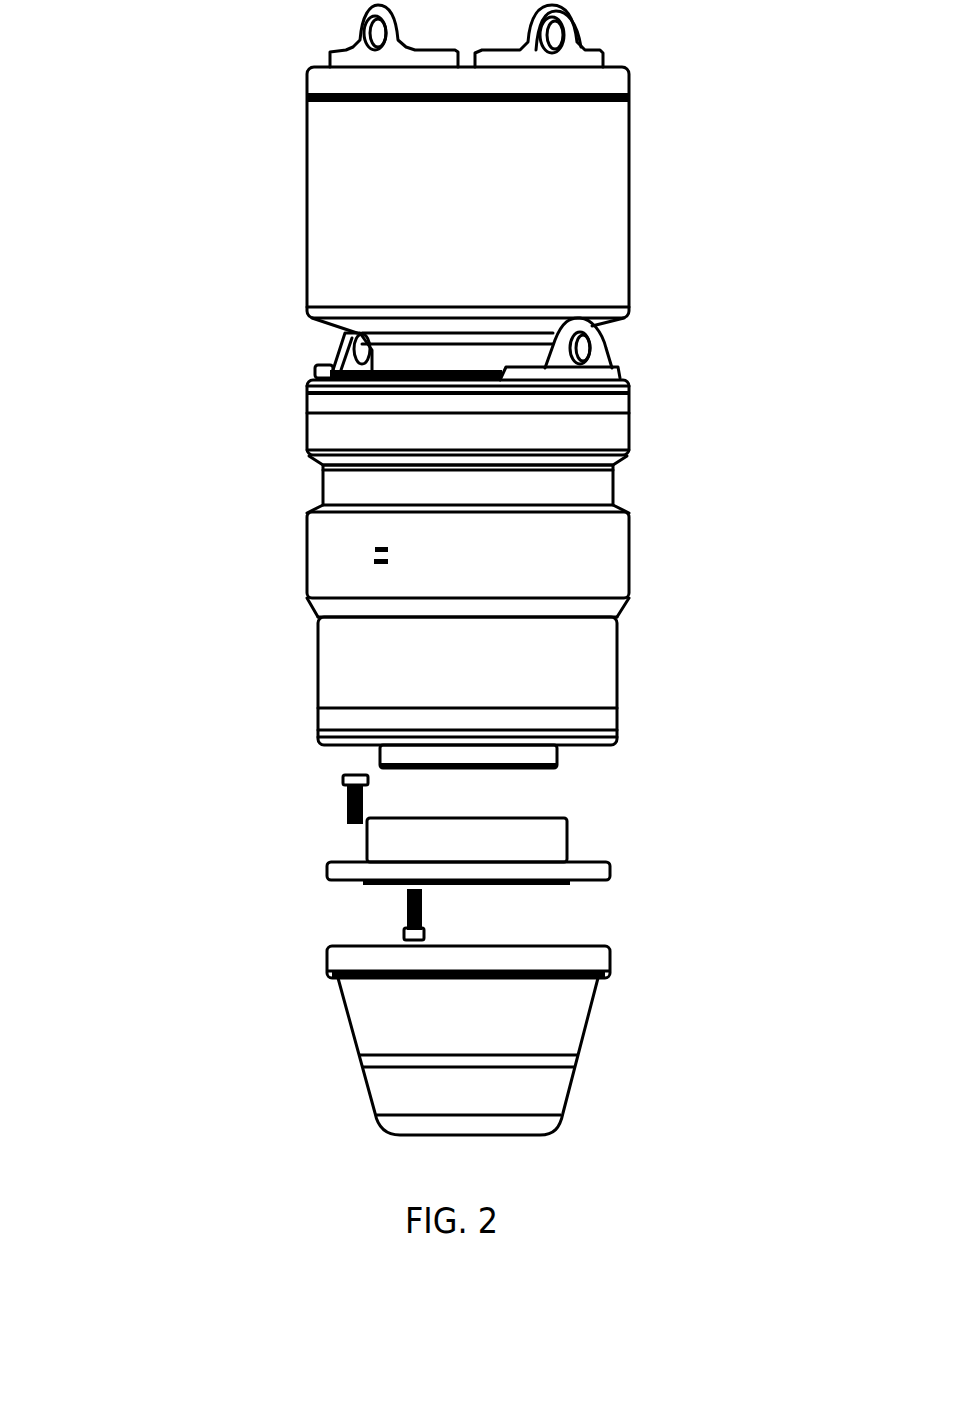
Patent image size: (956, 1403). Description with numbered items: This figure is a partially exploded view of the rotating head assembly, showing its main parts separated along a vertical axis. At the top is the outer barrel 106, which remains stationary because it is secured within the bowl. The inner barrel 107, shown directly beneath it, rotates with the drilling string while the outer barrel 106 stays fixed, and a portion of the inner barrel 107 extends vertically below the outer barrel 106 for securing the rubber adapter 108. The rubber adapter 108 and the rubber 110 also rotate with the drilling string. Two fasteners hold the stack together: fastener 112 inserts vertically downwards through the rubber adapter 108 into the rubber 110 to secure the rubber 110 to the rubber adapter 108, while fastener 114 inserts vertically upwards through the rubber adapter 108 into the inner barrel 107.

The outer barrel 106 is at (615, 663).
The inner barrel 107 is at (557, 770).
The rubber adapter 108 is at (610, 870).
The rubber 110 is at (577, 1037).
The fastener 112 is at (343, 779).
The fastener 114 is at (404, 911).